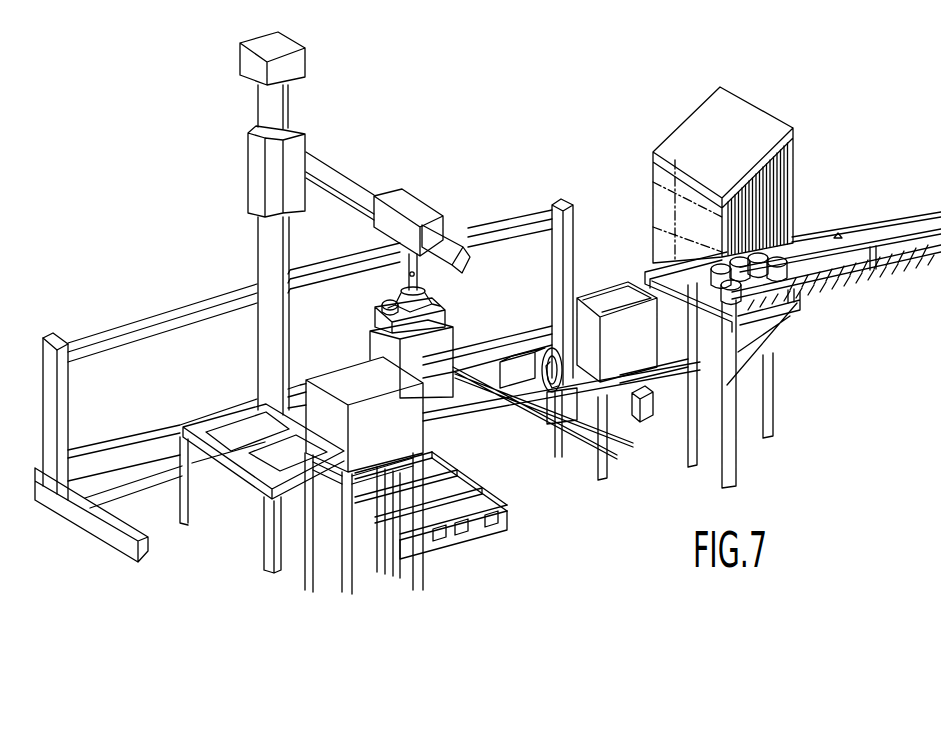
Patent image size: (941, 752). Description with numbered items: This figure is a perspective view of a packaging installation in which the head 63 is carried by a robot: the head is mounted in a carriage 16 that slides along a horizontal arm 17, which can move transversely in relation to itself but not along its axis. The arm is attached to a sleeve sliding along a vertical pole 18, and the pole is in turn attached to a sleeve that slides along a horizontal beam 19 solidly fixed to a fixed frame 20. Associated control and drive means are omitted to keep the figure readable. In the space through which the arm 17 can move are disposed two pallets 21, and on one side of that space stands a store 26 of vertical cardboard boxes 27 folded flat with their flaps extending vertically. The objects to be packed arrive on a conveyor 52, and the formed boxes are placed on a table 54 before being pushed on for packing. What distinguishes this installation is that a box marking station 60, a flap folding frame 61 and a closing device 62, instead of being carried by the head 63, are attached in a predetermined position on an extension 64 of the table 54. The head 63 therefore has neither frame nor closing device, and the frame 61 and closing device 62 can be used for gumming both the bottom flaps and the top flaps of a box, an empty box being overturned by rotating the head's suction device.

The carriage 16 is at (422, 202).
The horizontal arm 17 is at (348, 180).
The vertical pole 18 is at (257, 258).
The horizontal beam 19 is at (130, 467).
The fixed frame 20 is at (145, 315).
The pallets 21 is at (507, 510).
The store 26 is at (763, 110).
The cardboard boxes 27 is at (608, 280).
The conveyor 52 is at (908, 275).
The table 54 is at (777, 370).
The box marking station 60 is at (298, 563).
The flap folding frame 61 is at (632, 437).
The closing device 62 is at (537, 388).
The head 63 is at (457, 317).
The extension 64 is at (577, 400).